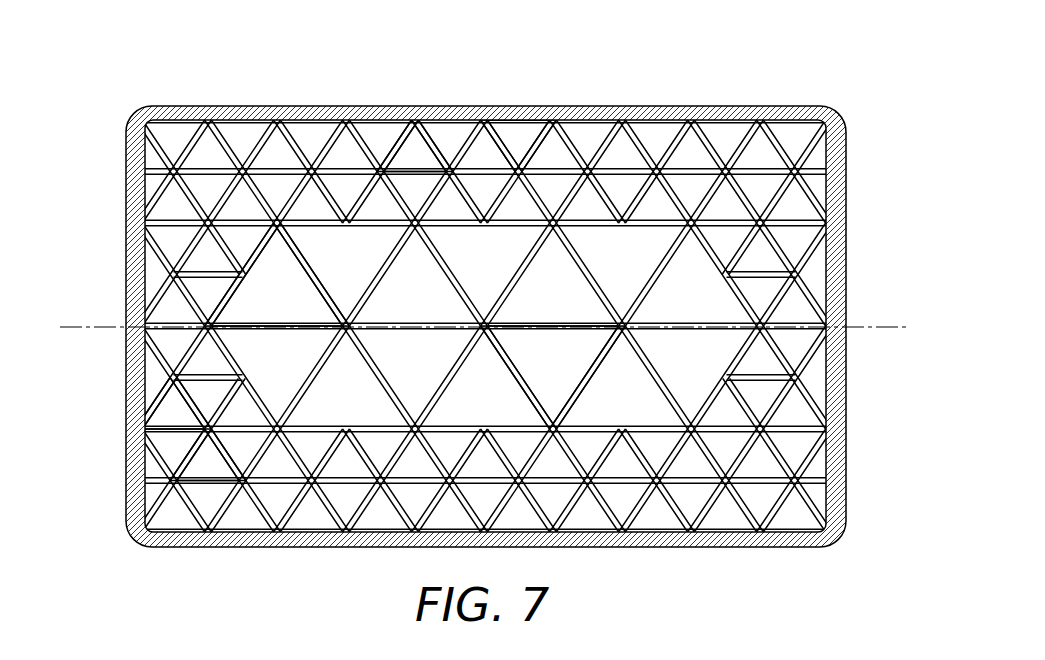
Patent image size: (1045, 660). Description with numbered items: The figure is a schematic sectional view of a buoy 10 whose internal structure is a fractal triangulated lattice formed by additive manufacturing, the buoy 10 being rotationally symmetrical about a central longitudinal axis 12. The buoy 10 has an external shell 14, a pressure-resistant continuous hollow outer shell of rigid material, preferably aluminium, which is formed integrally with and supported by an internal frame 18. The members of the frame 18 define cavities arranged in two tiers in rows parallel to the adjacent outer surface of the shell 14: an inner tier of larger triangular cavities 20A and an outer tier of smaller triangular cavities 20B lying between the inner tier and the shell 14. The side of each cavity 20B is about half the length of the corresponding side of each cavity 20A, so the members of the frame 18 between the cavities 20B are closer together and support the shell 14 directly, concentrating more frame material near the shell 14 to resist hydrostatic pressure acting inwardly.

The buoy 10 is at (862, 95).
The central longitudinal axis 12 is at (898, 331).
The external shell 14 is at (718, 113).
The frame 18 is at (290, 143).
The cavities of the inner tier 20A is at (303, 306).
The cavities of the outer tier 20B is at (518, 133).